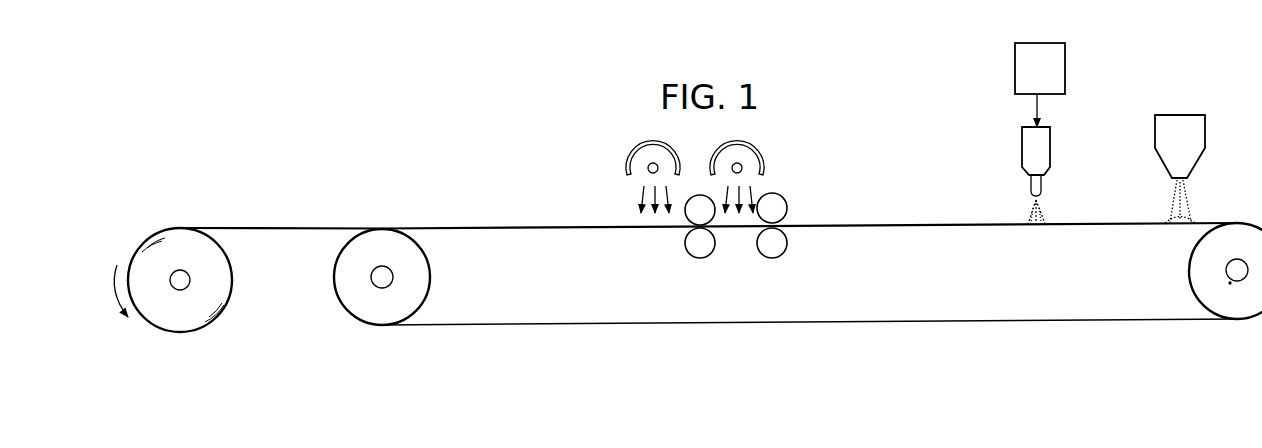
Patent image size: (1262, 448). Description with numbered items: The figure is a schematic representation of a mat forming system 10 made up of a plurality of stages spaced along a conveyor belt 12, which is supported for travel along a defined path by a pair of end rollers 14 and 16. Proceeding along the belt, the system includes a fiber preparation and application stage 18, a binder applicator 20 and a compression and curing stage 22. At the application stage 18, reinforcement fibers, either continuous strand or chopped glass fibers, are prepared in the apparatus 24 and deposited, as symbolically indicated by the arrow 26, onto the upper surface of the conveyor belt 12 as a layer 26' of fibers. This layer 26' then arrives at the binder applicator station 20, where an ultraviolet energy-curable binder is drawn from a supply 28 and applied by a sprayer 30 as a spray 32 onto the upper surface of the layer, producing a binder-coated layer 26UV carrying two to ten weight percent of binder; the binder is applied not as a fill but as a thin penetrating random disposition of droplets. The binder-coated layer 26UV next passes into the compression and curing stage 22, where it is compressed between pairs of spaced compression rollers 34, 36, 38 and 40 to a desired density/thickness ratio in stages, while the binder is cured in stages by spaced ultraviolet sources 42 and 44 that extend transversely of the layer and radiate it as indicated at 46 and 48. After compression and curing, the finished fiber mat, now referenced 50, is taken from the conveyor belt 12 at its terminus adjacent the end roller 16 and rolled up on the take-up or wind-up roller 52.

The mat forming system 10 is at (378, 161).
The conveyor belt 12 is at (938, 321).
The end roller 14 is at (1243, 309).
The end roller 16 is at (383, 315).
The fiber preparation and application stage 18 is at (1165, 119).
The binder applicator 20 is at (982, 68).
The compression and curing stage 22 is at (786, 156).
The apparatus 24 is at (1155, 134).
The arrow 26 is at (1160, 201).
The layer of fibers 26' is at (1094, 204).
The binder-coated layer 26UV is at (884, 224).
The supply 28 is at (1061, 73).
The sprayer 30 is at (1023, 148).
The spray 32 is at (1027, 216).
The compression roller 34 is at (788, 209).
The compression roller 36 is at (789, 245).
The compression roller 38 is at (692, 215).
The compression roller 40 is at (708, 253).
The ultraviolet source 42 is at (732, 150).
The ultraviolet source 44 is at (633, 156).
The ultraviolet radiation 46 is at (752, 203).
The ultraviolet radiation 48 is at (640, 205).
The finished fiber mat 50 is at (280, 227).
The wind-up roller 52 is at (228, 312).